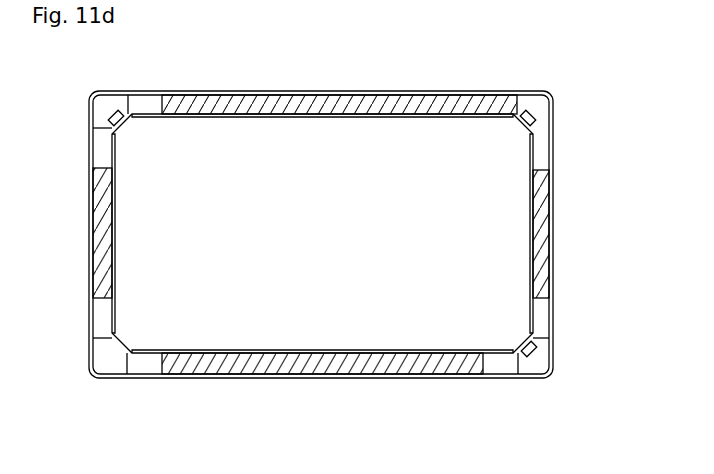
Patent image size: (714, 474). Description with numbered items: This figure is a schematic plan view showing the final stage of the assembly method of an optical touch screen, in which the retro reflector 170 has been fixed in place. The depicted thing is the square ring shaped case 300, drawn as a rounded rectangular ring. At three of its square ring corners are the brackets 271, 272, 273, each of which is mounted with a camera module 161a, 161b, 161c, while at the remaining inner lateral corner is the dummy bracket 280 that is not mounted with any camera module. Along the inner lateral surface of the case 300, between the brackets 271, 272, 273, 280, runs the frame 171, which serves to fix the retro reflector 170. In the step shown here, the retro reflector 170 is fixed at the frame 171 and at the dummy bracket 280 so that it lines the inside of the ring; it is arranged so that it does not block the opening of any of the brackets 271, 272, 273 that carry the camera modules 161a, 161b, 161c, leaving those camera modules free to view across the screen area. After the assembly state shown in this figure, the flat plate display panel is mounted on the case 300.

The square ring shaped case 300 is at (553, 197).
The retro reflector 170 is at (385, 117).
The frame 171 is at (313, 105).
The bracket 271 is at (100, 153).
The bracket 272 is at (543, 151).
The bracket 273 is at (543, 315).
The dummy bracket 280 is at (100, 313).
The camera module 161a is at (113, 111).
The camera module 161b is at (535, 114).
The camera module 161c is at (537, 354).